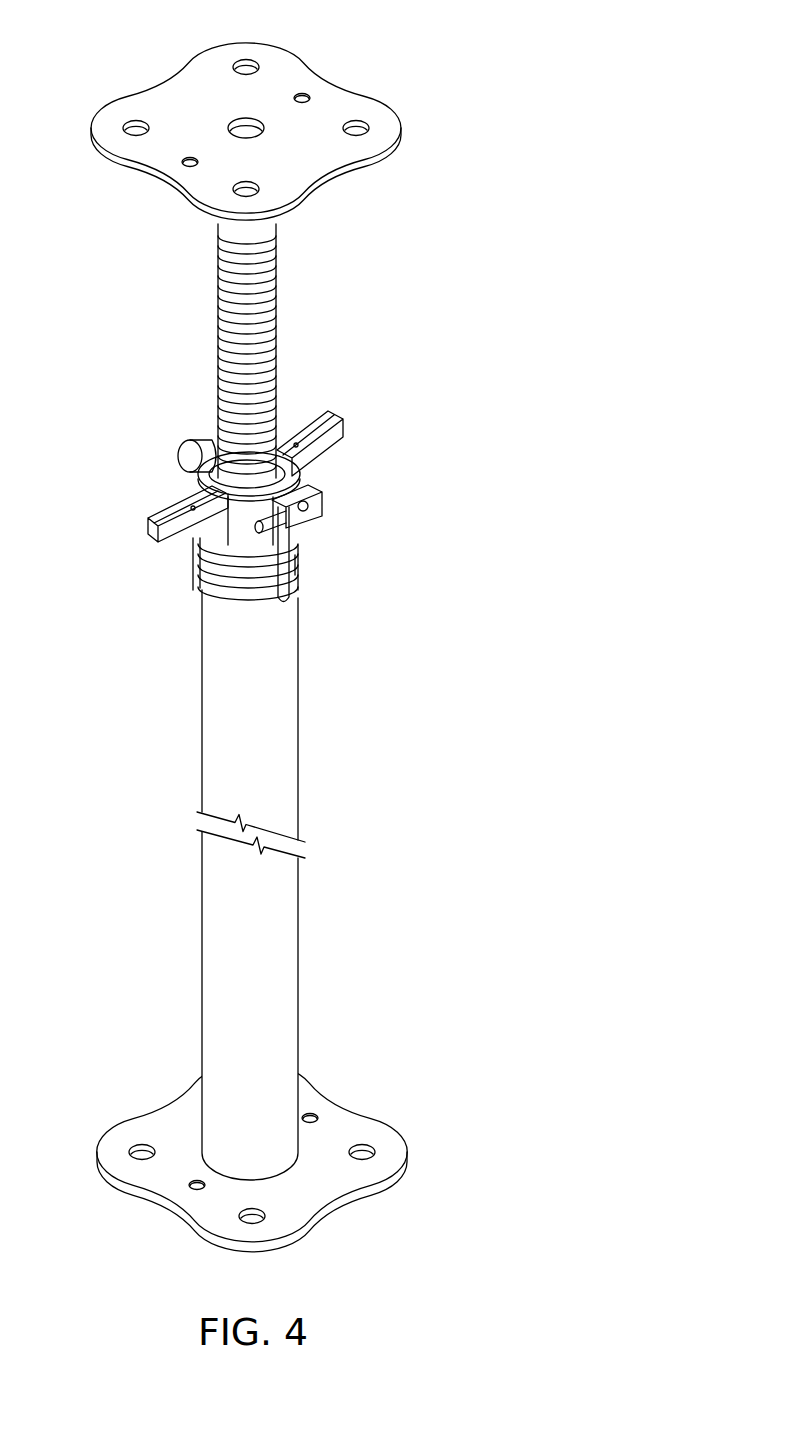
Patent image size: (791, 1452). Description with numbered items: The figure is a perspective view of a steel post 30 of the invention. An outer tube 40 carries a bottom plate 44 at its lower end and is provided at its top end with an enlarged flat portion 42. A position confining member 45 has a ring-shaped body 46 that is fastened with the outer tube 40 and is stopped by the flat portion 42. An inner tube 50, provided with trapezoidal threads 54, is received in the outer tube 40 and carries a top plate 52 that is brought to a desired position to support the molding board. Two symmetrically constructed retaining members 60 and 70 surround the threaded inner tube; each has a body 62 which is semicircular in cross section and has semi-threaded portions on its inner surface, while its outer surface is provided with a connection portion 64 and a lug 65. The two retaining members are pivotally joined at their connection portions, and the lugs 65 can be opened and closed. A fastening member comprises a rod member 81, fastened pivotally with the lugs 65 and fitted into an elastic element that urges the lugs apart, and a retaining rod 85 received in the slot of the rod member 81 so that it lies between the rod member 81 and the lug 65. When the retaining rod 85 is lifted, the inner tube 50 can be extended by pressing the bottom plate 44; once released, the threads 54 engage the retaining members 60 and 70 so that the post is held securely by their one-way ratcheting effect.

The steel post 30 is at (115, 75).
The top plate 52 is at (295, 72).
The trapezoidal threads 54 is at (265, 325).
The inner tube 50 is at (312, 351).
The connection portion 64 is at (197, 437).
The retaining member 60 is at (340, 444).
The retaining member 70 is at (180, 483).
The lug 65 is at (317, 510).
The rod member 81 is at (285, 543).
The retaining rod 85 is at (297, 562).
The position confining member 45 is at (241, 623).
The body 62 is at (238, 535).
The ring-shaped body 46 is at (242, 605).
The enlarged flat portion 42 is at (252, 577).
The outer tube 40 is at (312, 798).
The bottom plate 44 is at (363, 1123).